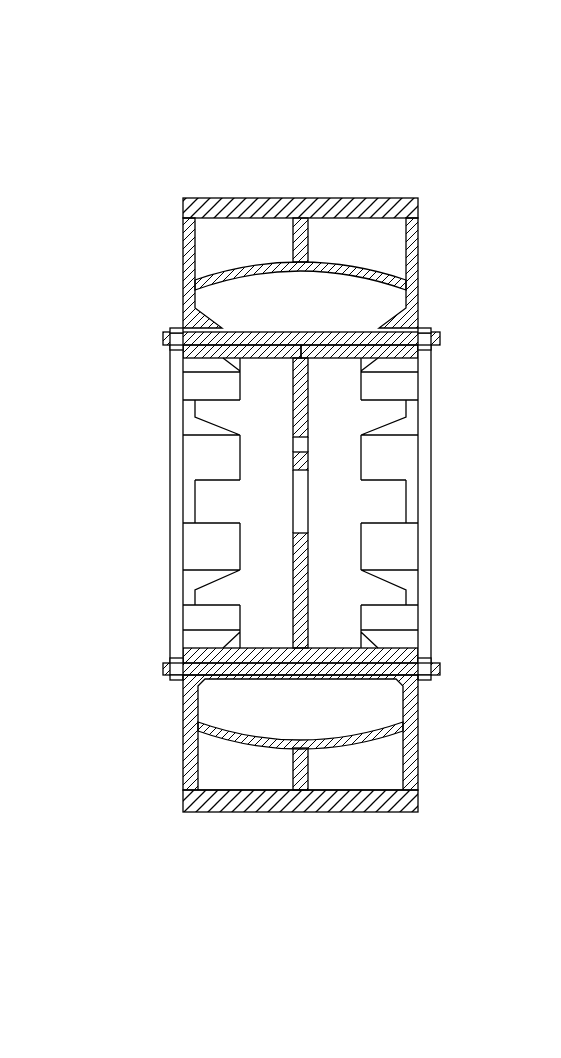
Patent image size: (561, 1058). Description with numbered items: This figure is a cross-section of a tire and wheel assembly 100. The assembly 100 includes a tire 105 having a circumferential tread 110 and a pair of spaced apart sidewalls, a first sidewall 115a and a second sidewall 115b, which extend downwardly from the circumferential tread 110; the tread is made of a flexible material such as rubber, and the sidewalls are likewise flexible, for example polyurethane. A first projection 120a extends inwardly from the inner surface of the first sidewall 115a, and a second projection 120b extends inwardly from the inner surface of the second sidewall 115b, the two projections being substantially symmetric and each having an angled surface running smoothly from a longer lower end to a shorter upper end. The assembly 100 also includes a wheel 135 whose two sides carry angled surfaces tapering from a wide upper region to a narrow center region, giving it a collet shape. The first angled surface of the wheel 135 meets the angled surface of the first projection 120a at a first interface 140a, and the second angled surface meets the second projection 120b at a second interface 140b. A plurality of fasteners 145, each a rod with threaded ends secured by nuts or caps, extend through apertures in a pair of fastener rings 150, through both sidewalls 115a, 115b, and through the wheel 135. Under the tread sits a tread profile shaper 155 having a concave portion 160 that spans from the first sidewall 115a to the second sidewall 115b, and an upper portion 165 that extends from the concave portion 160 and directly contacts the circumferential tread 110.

The tire and wheel assembly 100 is at (386, 54).
The tire 105 is at (165, 244).
The circumferential tread 110 is at (388, 197).
The first sidewall 115a is at (185, 740).
The second sidewall 115b is at (398, 272).
The first projection 120a is at (188, 352).
The second projection 120b is at (410, 353).
The wheel 135 is at (312, 605).
The first interface 140a is at (222, 328).
The second interface 140b is at (378, 328).
The fastener 145 is at (442, 668).
The fastener ring 150 is at (170, 545).
The tread profile shaper 155 is at (223, 753).
The concave portion 160 is at (383, 747).
The upper portion 165 is at (301, 773).